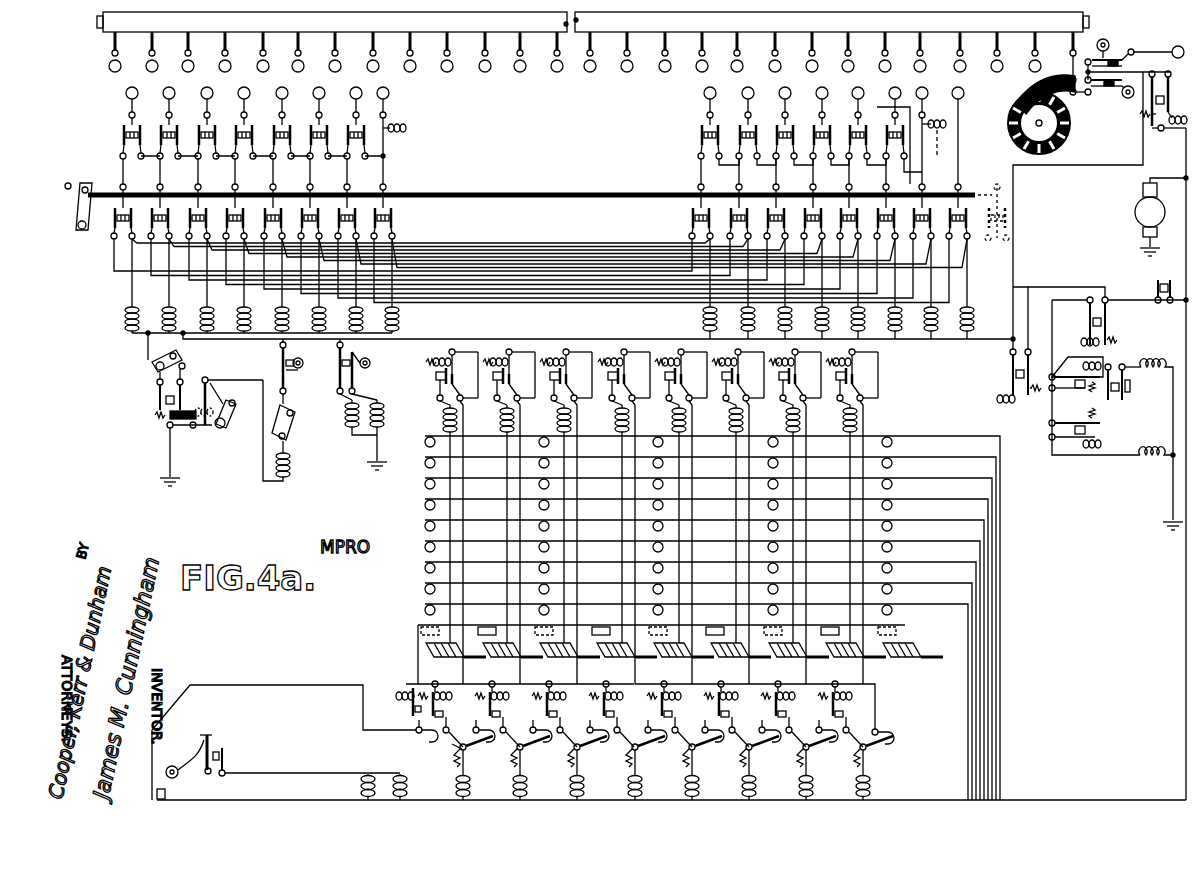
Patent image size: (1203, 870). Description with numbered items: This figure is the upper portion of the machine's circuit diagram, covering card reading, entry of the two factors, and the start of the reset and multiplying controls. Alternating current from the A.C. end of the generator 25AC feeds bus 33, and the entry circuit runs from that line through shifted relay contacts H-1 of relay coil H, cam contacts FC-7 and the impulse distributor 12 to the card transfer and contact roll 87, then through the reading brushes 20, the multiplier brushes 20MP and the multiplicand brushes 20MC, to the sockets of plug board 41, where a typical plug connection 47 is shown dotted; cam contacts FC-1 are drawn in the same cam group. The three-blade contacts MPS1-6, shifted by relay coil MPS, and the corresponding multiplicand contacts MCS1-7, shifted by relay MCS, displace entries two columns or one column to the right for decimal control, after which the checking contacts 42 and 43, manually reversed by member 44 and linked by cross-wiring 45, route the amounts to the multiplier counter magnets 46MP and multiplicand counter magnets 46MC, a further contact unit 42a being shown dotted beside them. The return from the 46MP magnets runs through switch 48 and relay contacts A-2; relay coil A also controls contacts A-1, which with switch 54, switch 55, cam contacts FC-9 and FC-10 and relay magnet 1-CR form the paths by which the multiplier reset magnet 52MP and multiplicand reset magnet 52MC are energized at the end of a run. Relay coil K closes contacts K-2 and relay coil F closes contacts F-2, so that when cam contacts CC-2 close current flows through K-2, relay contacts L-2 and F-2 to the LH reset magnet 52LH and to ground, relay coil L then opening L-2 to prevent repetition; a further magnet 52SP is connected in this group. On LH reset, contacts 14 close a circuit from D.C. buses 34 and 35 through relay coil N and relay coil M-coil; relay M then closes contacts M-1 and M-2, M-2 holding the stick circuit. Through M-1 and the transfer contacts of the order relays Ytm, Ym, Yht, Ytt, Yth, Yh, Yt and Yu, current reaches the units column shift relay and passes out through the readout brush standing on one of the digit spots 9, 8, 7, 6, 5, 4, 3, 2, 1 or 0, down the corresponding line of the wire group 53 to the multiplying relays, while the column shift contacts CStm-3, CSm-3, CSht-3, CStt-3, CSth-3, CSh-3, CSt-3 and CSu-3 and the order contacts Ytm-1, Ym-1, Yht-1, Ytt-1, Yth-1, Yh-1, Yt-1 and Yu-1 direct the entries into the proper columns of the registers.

The regular brushes 20 is at (560, 48).
The card transfer and contact roll 87 is at (104, 22).
The plug board 41 is at (378, 70).
The multiplicand brushes 20MC is at (302, 45).
The multiplier brushes 20MP is at (818, 45).
The plug connection 47 is at (888, 70).
The multiplicand shift contacts MCS1-7 is at (152, 108).
The multiplicand shift relay magnet MCS is at (406, 131).
The three-blade multi-contact points MPS1-6 is at (728, 124).
The special relay coil MPS is at (938, 147).
The manual shifting member 44 is at (80, 181).
The three-blade checking contacts 43 is at (393, 210).
The three-blade checking contacts 42 is at (690, 210).
The auxiliary transfer relay 42a is at (1008, 218).
The cross-wiring 45 is at (521, 258).
The multiplicand counter magnets 46MC is at (400, 318).
The multiplier counter magnets 46MP is at (705, 318).
The impulse distributor 12 is at (1016, 100).
The cam contact FC-1 is at (1113, 58).
The cam contacts FC-7 is at (1110, 86).
The relay coil H is at (1181, 113).
The relay contacts H-1 is at (1155, 98).
The A.C. end of the generator 25AC is at (1141, 222).
The switch 48 is at (152, 364).
The relay contacts A-2 is at (162, 398).
The relay coil A is at (204, 430).
The relay contacts A-1 is at (198, 392).
The switch 55 is at (232, 429).
The cam contact FC-9 is at (287, 359).
The switch 54 is at (297, 433).
The MP reset magnet 52MP is at (297, 466).
The cam contacts FC-10 is at (348, 363).
The MC reset magnet 52MC is at (354, 413).
The relay magnet 1-CR is at (384, 432).
The relay contacts M-1 is at (1014, 354).
The relay coil M is at (1009, 386).
The relay contacts K-2 is at (1091, 311).
The relay coil K is at (1080, 338).
The cam contacts CC-2 is at (1157, 298).
The space clutch magnet 52SP is at (1146, 398).
The LH reset magnet 52LH is at (1142, 463).
The relay coil L is at (1085, 368).
The relay contacts L-2 is at (1056, 389).
The relay contacts F-2 is at (1050, 436).
The relay coil F is at (1100, 440).
The A.C. line 33 is at (1186, 576).
The Y transfer relay, ten-millions order Ytm is at (436, 386).
The Y transfer relay, millions order Ym is at (499, 516).
The Y transfer relay, hundred-thousands order Yht is at (554, 516).
The Y transfer relay, ten-thousands order Ytt is at (612, 516).
The Y transfer relay, thousands order Yth is at (669, 516).
The Y transfer relay, hundreds order Yh is at (728, 516).
The Y transfer relay, tens order Yt is at (785, 516).
The Y transfer relay, units order Yu is at (842, 516).
The readout spot and line 9 is at (712, 618).
The readout spot and line 8 is at (710, 628).
The readout spot and line 7 is at (708, 639).
The readout spot and line 6 is at (706, 649).
The readout spot and line 5 is at (704, 660).
The readout spot and line 4 is at (702, 670).
The readout spot and line 3 is at (700, 681).
The readout spot and line 2 is at (698, 691).
The readout spot and line 1 is at (696, 702).
The readout spot and line 0 is at (680, 654).
The group of wires 53 is at (982, 742).
The relay contacts M-2 is at (410, 710).
The column shift relay contacts CStm-3 is at (431, 714).
The column shift relay contacts CSm-3 is at (485, 720).
The column shift relay contacts CSht-3 is at (542, 720).
The column shift relay contacts CStt-3 is at (599, 720).
The column shift relay contacts CSth-3 is at (657, 720).
The column shift relay contacts CSh-3 is at (714, 720).
The column shift relay contacts CSt-3 is at (771, 720).
The column shift relay contacts CSu-3 is at (828, 720).
The Y relay contacts Ytm-1 is at (470, 794).
The Y relay contacts Ym-1 is at (536, 768).
The Y relay contacts Yht-1 is at (593, 768).
The Y relay contacts Ytt-1 is at (649, 768).
The Y relay contacts Yth-1 is at (708, 768).
The Y relay contacts Yh-1 is at (762, 768).
The Y relay contacts Yt-1 is at (818, 768).
The Y relay contacts Yu-1 is at (876, 768).
The reset contact pair 14 is at (217, 750).
The relay coil N is at (360, 791).
The relay coil M M-coil is at (408, 791).
The D.C. line bus 34 is at (157, 794).
The D.C. line bus 35 is at (235, 800).